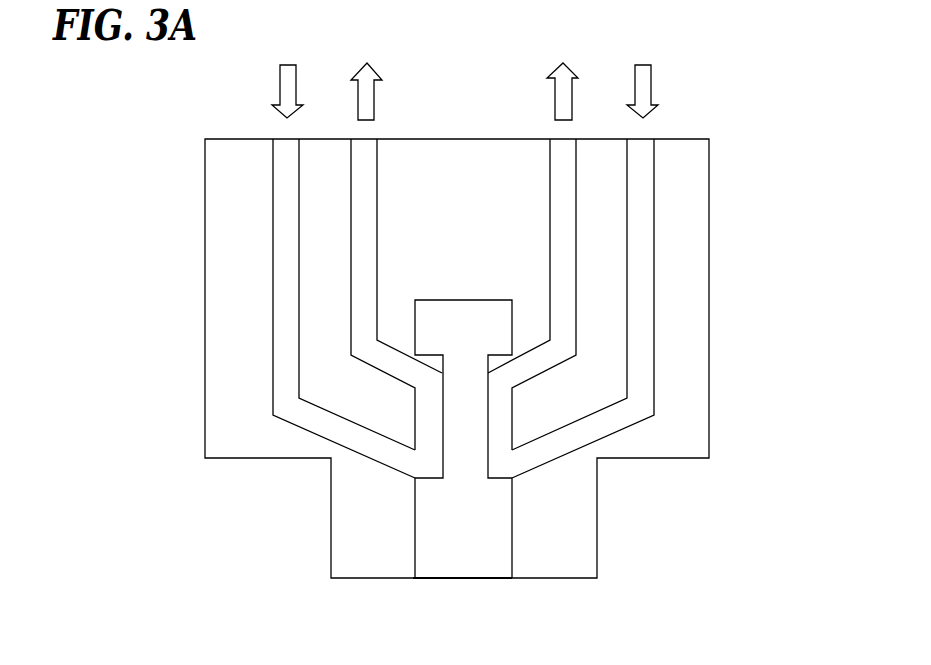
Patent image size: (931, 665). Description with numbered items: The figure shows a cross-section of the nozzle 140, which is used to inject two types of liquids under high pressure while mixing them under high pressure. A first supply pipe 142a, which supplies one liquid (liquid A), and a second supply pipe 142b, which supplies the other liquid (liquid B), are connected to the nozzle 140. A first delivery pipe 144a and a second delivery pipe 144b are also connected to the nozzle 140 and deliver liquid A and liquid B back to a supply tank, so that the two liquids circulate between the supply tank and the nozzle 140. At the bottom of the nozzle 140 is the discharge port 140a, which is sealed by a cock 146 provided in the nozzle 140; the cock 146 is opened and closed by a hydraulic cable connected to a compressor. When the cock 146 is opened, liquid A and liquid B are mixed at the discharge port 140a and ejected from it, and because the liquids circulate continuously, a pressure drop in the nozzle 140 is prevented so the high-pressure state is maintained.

The nozzle 140 is at (742, 252).
The discharge port 140a is at (500, 580).
The first supply pipe 142a is at (277, 148).
The second supply pipe 142b is at (655, 147).
The first delivery pipe 144a is at (377, 148).
The second delivery pipe 144b is at (553, 147).
The cock 146 is at (437, 558).